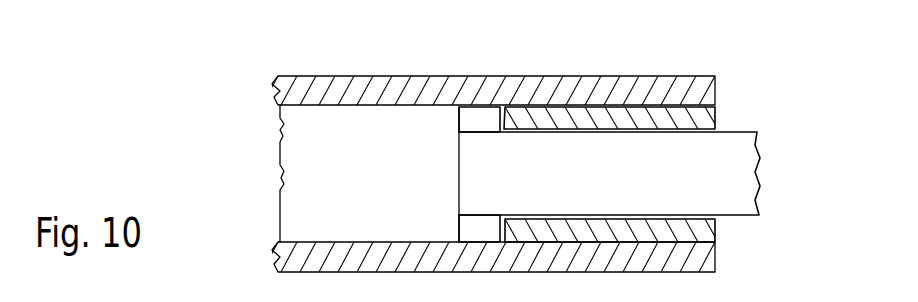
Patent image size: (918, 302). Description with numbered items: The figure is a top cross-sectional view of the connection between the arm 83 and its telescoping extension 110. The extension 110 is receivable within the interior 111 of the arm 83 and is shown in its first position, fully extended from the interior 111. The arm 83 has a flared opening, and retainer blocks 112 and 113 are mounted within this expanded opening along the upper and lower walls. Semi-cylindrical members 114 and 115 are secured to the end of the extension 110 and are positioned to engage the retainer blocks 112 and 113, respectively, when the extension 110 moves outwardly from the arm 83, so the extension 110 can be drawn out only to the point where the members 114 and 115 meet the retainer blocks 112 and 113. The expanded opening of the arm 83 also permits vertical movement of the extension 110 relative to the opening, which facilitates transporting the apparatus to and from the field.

The arm 83 is at (292, 76).
The telescoping extension 110 is at (757, 131).
The interior 111 is at (280, 165).
The retainer block 112 is at (548, 109).
The retainer block 113 is at (715, 240).
The semi-cylindrical member 114 is at (482, 109).
The semi-cylindrical member 115 is at (459, 222).